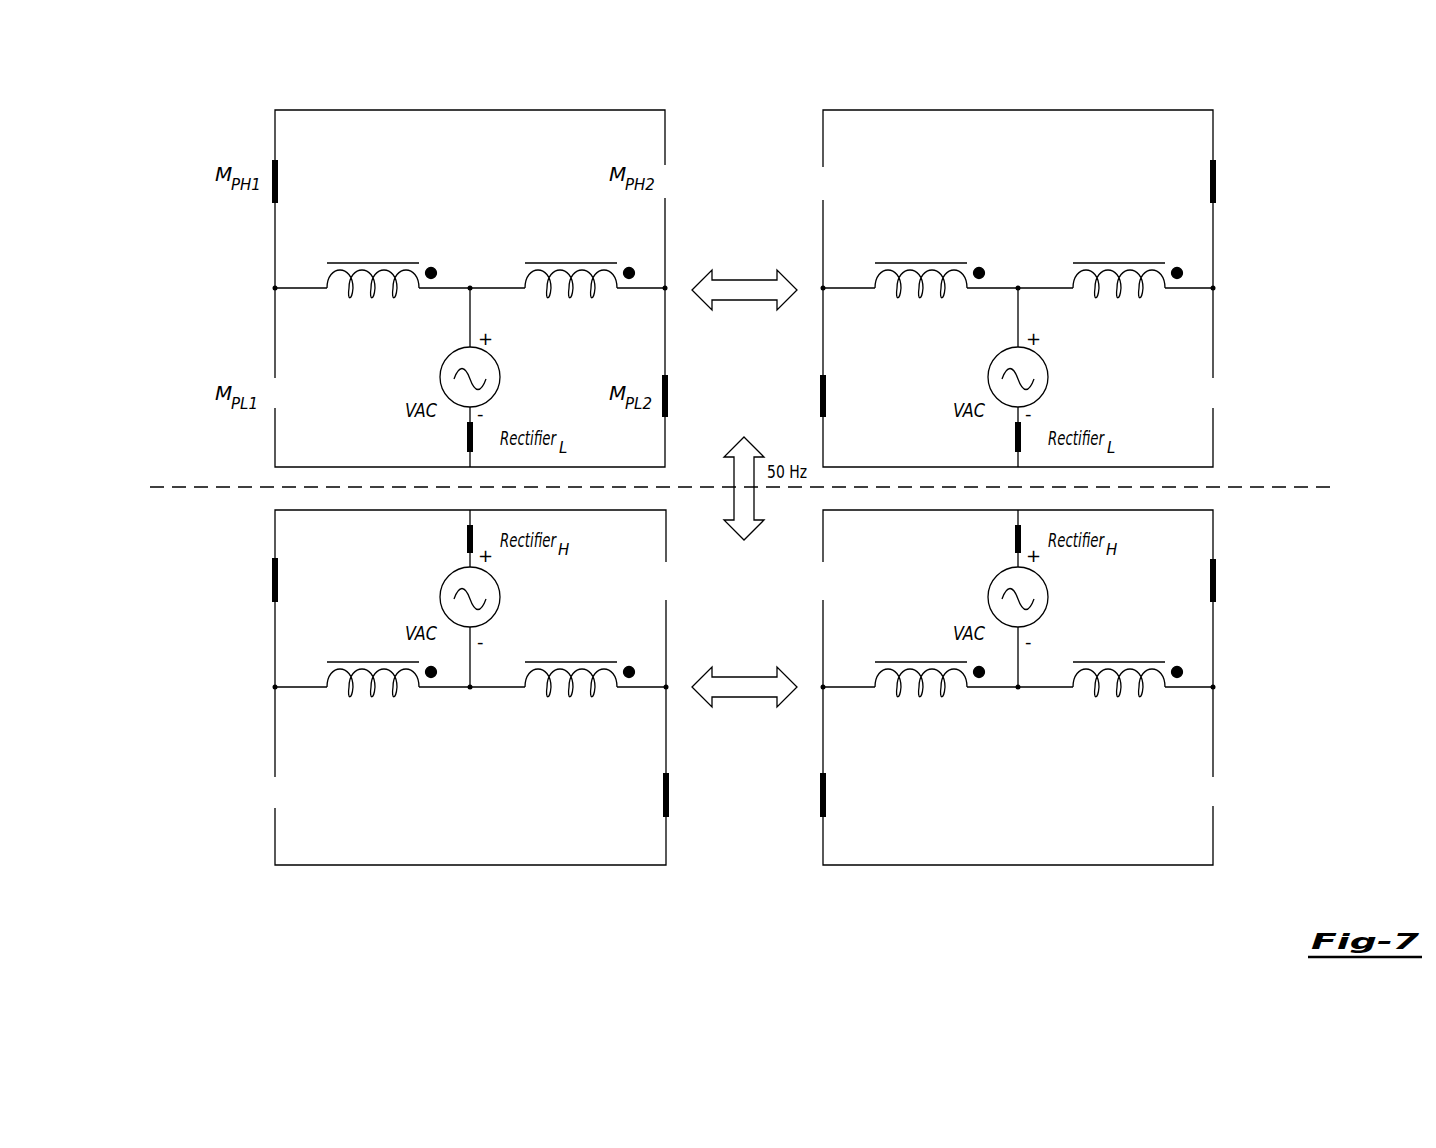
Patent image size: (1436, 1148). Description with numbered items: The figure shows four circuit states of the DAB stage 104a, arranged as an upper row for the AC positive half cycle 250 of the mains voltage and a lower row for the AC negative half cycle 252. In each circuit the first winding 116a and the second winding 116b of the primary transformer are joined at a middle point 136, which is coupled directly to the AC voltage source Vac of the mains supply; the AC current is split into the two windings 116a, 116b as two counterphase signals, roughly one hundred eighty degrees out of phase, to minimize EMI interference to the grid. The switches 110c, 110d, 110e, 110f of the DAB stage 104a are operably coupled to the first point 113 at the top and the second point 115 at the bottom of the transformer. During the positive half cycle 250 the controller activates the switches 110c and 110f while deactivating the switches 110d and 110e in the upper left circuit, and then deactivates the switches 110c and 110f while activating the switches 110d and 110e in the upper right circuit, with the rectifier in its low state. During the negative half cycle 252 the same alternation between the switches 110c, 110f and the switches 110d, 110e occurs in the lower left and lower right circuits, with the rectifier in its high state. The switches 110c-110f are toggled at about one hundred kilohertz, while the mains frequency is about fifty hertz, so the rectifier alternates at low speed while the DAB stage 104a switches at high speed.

The DAB stage 104a is at (639, 76).
The AC positive half cycle 250 is at (290, 76).
The AC negative half cycle 252 is at (292, 898).
The switch 110c is at (279, 181).
The switch 110d is at (278, 393).
The switch 110e is at (668, 181).
The switch 110f is at (669, 393).
The first point 113 is at (279, 291).
The second point 115 is at (661, 291).
The middle point 136 is at (470, 288).
The first winding 116a is at (385, 296).
The second winding 116b is at (580, 296).